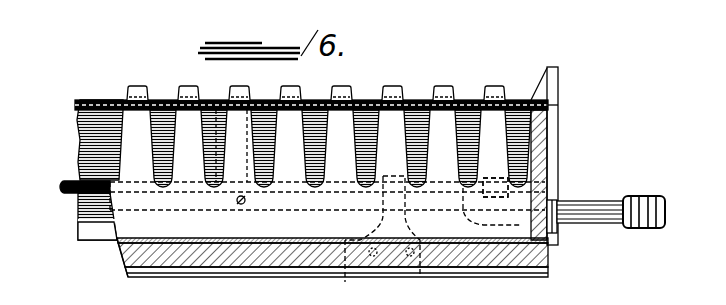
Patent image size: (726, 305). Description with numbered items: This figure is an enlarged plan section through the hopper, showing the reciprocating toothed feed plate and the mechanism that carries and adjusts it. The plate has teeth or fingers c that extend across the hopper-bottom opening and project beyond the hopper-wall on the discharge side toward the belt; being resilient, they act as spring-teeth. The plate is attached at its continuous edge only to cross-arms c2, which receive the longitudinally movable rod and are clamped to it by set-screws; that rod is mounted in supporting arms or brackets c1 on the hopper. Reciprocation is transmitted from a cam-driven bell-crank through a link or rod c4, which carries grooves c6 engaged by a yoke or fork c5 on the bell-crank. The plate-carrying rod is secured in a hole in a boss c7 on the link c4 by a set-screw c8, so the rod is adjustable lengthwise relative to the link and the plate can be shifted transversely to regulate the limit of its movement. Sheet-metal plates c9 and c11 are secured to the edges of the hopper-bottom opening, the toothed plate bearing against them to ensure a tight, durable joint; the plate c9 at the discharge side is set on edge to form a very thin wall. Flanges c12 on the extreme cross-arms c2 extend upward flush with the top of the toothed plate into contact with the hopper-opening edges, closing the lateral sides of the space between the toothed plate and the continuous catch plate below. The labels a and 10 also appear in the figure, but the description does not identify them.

The teeth or fingers c is at (190, 90).
The supporting arms or brackets c1 is at (62, 189).
The cross-arms c2 is at (197, 186).
The link or rod c4 is at (585, 203).
The yoke or fork c5 is at (88, 115).
The grooves c6 is at (647, 197).
The boss c7 is at (463, 193).
The set-screw c8 is at (474, 178).
The sheet-metal plate c9 is at (460, 108).
The sheet-metal plate c11 is at (552, 128).
The flanges c12 is at (552, 77).
The frame body a is at (177, 190).
The base bar 10 is at (308, 227).